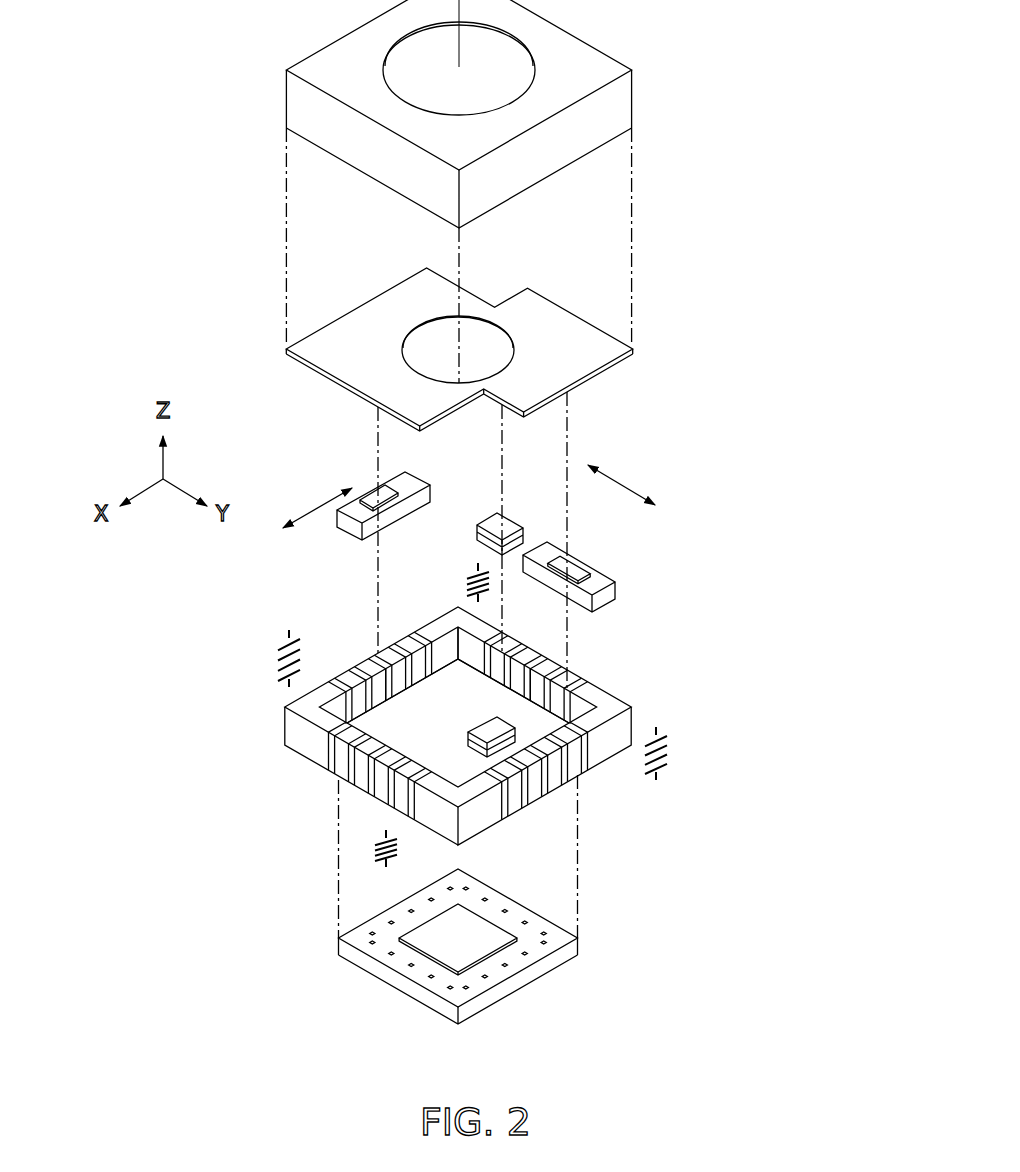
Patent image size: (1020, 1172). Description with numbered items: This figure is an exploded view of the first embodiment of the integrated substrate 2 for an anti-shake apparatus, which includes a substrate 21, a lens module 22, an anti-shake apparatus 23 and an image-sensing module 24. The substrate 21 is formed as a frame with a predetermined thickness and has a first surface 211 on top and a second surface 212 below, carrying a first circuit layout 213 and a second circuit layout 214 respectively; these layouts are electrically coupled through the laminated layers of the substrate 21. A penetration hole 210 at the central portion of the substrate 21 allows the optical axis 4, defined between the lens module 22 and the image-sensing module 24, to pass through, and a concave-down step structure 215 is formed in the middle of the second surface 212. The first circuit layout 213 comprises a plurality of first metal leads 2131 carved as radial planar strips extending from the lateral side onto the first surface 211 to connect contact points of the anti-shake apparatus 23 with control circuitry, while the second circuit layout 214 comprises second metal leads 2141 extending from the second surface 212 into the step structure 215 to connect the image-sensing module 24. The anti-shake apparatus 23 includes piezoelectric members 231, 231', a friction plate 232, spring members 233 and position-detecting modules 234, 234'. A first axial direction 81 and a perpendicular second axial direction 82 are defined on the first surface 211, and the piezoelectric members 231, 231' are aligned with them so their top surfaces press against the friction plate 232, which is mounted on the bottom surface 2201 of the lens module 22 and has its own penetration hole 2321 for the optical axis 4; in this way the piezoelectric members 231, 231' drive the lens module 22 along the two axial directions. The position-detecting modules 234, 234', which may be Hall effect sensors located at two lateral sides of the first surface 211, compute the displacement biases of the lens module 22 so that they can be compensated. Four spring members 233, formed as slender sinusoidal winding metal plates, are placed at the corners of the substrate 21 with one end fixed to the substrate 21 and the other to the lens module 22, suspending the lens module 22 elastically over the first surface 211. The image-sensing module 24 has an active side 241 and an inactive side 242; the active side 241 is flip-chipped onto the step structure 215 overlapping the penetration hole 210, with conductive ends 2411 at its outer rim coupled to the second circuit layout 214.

The integrated substrate 2 is at (178, 88).
The lens module 22 is at (632, 97).
The bottom surface of the lens module 2201 is at (550, 180).
The optical axis 4 is at (459, 262).
The friction plate 232 is at (541, 312).
The penetration hole of the friction plate 2321 is at (432, 340).
The anti-shake apparatus 23 is at (690, 505).
The piezoelectric member 231 is at (363, 482).
The piezoelectric member 231' is at (612, 573).
The first axial direction 81 is at (328, 508).
The second axial direction 82 is at (630, 483).
The position-detecting module 234' is at (520, 513).
The position-detecting module 234 is at (463, 737).
The spring member 233 is at (280, 648).
The substrate 21 is at (625, 725).
The first surface 211 is at (610, 703).
The second surface 212 is at (612, 758).
The first circuit layout 213 is at (592, 672).
The second circuit layout 214 is at (388, 708).
The step structure 215 is at (342, 718).
The penetration hole 210 is at (448, 667).
The first metal lead 2131 is at (357, 665).
The second metal lead 2141 is at (530, 672).
The image-sensing module 24 is at (573, 947).
The active side 241 is at (515, 957).
The conductive end 2411 is at (525, 922).
The inactive side 242 is at (380, 978).